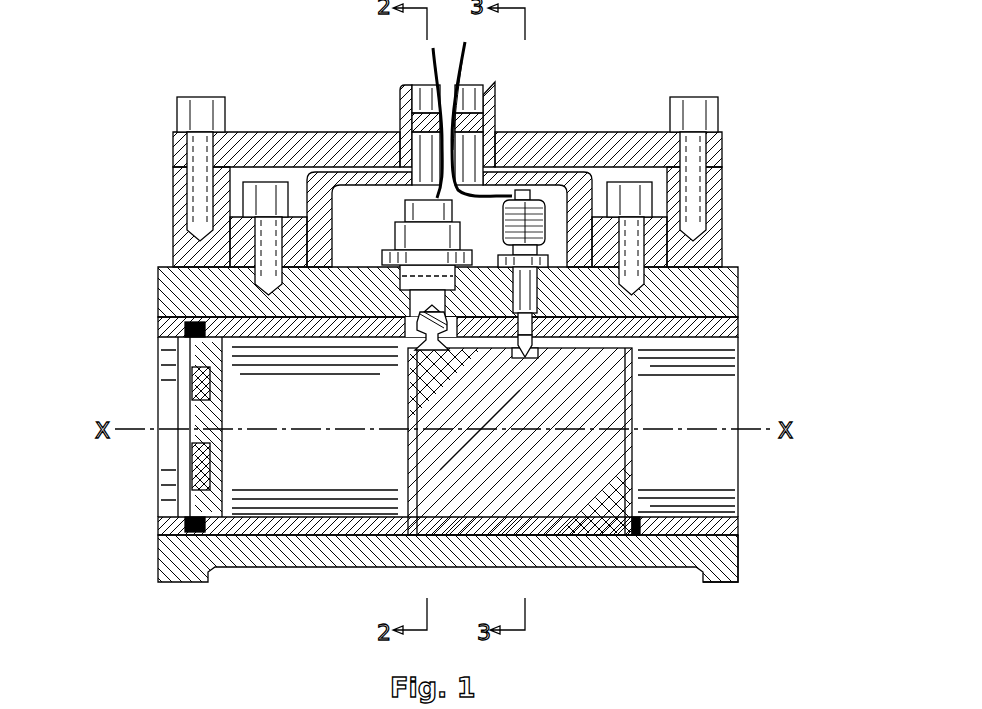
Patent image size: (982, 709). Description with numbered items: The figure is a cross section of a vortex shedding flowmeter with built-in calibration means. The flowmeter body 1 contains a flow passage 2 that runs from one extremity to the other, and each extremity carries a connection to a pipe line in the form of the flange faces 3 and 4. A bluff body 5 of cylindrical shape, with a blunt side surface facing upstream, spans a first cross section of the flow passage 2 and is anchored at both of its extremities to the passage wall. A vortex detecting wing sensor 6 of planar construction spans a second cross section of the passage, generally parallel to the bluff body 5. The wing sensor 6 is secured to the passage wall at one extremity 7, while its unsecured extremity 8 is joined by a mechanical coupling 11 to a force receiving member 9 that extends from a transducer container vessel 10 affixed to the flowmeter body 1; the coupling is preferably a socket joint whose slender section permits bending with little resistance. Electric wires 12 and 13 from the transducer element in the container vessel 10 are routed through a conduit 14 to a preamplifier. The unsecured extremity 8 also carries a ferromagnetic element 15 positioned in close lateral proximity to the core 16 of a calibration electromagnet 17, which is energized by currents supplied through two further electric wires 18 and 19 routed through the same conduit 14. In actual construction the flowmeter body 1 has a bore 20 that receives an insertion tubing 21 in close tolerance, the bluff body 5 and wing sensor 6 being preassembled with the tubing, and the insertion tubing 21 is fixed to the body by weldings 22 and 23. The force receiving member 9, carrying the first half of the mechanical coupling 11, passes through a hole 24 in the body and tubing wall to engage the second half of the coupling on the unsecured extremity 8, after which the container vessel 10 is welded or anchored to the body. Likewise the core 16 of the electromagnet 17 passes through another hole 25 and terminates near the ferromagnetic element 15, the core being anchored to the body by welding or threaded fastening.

The flowmeter body 1 is at (285, 567).
The flow passage 2 is at (682, 490).
The flange face 3 is at (158, 545).
The flange face 4 is at (740, 556).
The bluff body 5 is at (205, 448).
The vortex detecting wing sensor 6 is at (700, 467).
The secured extremity 7 is at (572, 532).
The unsecured extremity 8 is at (565, 437).
The force receiving member 9 is at (213, 400).
The transducer container vessel 10 is at (420, 240).
The mechanical coupling 11 is at (405, 345).
The electric wire 12 is at (435, 45).
The electric wire 13 is at (430, 60).
The conduit 14 is at (550, 205).
The ferromagnetic element 15 is at (528, 355).
The core 16 is at (537, 348).
The calibration electromagnet 17 is at (550, 226).
The electric wire 18 is at (456, 44).
The electric wire 19 is at (472, 64).
The bore 20 is at (334, 520).
The insertion tubing 21 is at (737, 533).
The welding 22 is at (403, 298).
The welding 23 is at (540, 322).
The hole 24 is at (222, 390).
The hole 25 is at (540, 295).